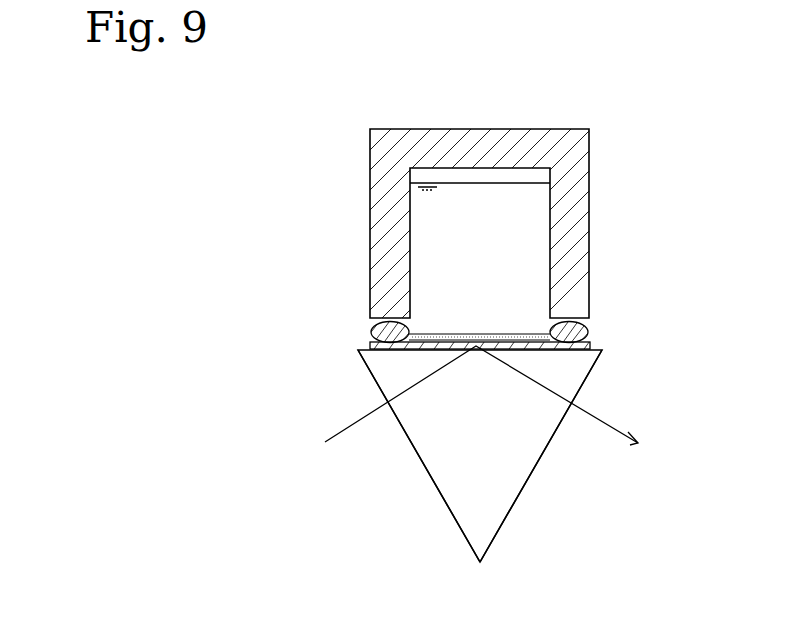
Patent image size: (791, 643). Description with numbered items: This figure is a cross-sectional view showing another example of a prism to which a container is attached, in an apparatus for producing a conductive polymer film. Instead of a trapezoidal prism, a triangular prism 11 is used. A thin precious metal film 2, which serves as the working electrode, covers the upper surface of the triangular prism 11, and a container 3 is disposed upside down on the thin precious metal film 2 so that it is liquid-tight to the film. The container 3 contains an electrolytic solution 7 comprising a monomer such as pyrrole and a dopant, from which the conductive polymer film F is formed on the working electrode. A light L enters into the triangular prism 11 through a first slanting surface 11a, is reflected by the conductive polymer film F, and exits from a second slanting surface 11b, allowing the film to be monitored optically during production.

The thin precious metal film 2 is at (588, 345).
The container 3 is at (588, 162).
The electrolytic solution 7 is at (478, 205).
The conductive polymer film F is at (496, 335).
The triangular prism 11 is at (582, 372).
The first slanting surface 11a is at (425, 475).
The second slanting surface 11b is at (528, 480).
The light L is at (347, 428).